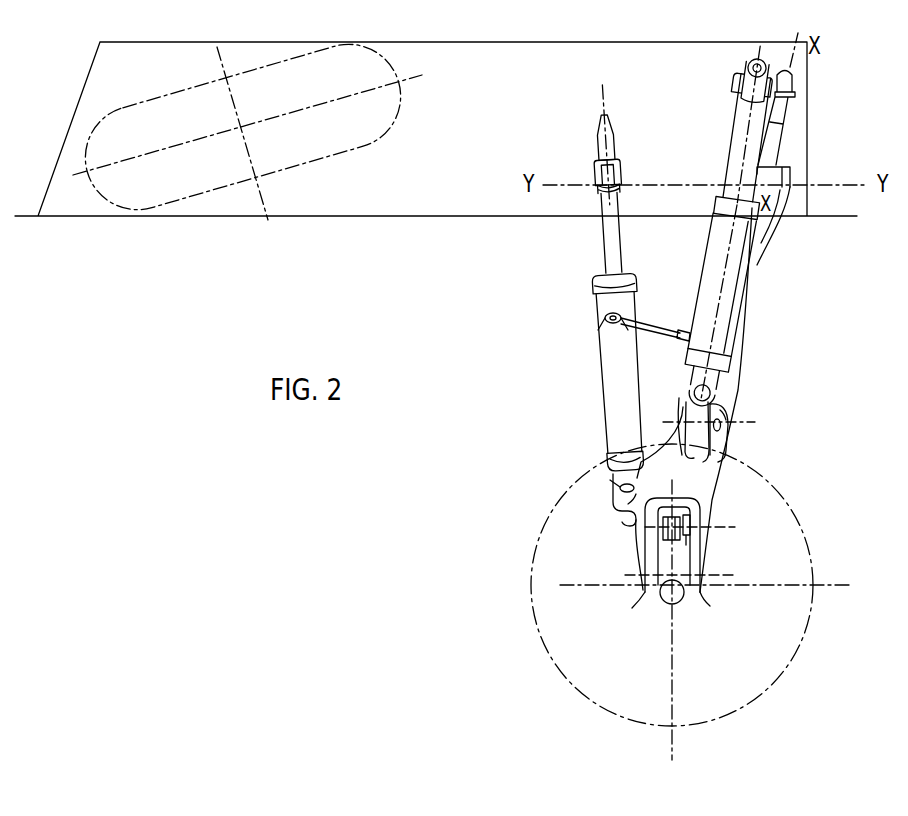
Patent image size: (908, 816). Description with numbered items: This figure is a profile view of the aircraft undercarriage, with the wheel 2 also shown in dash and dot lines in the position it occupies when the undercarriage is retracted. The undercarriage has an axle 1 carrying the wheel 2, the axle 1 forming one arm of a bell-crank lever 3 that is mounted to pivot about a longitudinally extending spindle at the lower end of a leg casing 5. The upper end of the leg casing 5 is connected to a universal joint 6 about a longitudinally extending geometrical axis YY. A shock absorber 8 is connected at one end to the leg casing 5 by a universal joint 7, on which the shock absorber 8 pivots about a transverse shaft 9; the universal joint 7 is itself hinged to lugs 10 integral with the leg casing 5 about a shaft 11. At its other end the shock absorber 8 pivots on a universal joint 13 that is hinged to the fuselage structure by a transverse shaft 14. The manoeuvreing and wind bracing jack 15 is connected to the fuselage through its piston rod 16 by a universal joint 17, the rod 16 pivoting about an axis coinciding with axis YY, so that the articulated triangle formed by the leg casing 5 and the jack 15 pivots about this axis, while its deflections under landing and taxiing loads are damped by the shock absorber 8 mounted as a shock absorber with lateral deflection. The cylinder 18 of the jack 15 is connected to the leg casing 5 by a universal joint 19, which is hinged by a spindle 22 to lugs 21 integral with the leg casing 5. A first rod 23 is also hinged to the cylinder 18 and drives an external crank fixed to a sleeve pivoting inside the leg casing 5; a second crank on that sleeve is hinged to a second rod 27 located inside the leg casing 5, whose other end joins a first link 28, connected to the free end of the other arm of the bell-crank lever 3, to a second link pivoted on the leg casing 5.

The axle 1 is at (677, 601).
The wheel 2 is at (778, 659).
The bell-crank lever 3 is at (650, 591).
The leg casing 5 is at (745, 317).
The universal joint 6 is at (782, 124).
The universal joint 7 is at (710, 406).
The shock absorber 8 is at (737, 262).
The transverse shaft 9 is at (695, 390).
The lugs 10 is at (714, 448).
The shaft 11 is at (722, 425).
The universal joint 13 is at (746, 92).
The transverse shaft 14 is at (748, 68).
The manoeuvreing and wind bracing jack 15 is at (582, 306).
The piston rod 16 is at (600, 247).
The universal joint 17 is at (613, 146).
The cylinder 18 is at (608, 380).
The universal joint 19 is at (612, 506).
The lugs 21 is at (622, 520).
The spindle 22 is at (578, 477).
The first rod 23 is at (658, 334).
The second rod 27 is at (690, 522).
The first link 28 is at (682, 545).